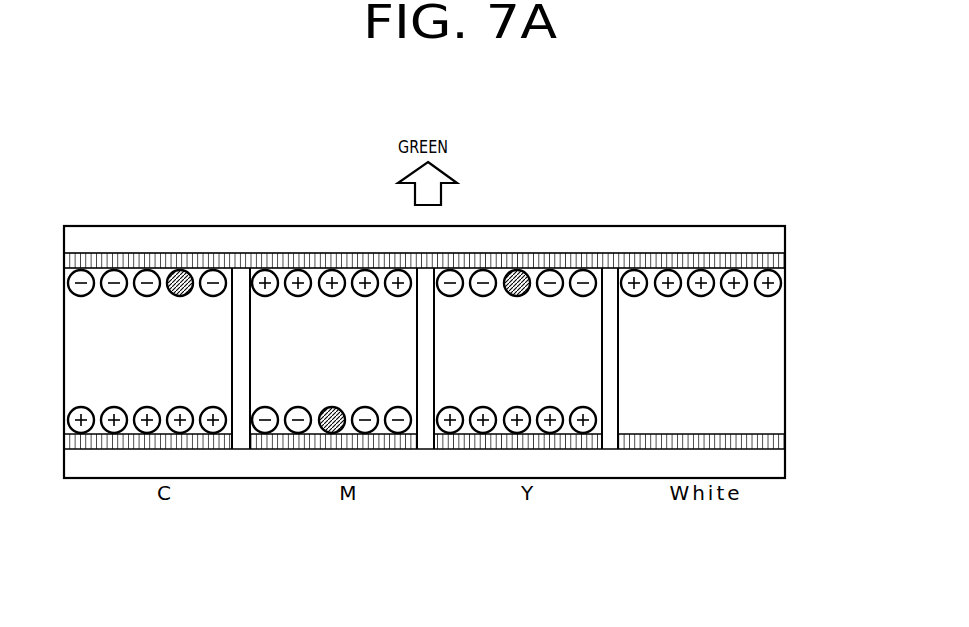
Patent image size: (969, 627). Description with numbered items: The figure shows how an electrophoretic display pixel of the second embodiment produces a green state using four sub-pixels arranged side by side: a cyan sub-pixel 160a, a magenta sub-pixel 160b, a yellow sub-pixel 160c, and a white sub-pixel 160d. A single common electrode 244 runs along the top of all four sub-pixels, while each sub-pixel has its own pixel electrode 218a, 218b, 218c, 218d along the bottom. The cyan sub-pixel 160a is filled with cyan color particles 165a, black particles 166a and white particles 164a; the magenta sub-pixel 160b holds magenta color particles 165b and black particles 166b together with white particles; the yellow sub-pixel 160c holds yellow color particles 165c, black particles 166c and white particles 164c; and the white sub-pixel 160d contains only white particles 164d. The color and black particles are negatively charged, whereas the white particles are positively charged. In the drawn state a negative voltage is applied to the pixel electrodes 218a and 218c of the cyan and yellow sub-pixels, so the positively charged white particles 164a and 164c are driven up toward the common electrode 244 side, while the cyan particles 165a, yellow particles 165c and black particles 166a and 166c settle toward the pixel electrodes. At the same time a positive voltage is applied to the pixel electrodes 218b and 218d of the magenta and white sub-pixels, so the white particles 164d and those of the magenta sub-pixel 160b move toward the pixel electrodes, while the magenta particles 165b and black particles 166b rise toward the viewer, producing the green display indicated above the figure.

The common electrode 244 is at (778, 259).
The cyan pixel cell 160a is at (90, 333).
The magenta pixel cell 160b is at (337, 335).
The yellow pixel cell 160c is at (565, 335).
The white pixel cell 160d is at (710, 335).
The white particles 164a is at (298, 270).
The white particles 164c is at (550, 433).
The white particles 164d is at (665, 271).
The cyan color particles 165a is at (213, 270).
The magenta color particles 165b is at (298, 433).
The yellow color particles 165c is at (452, 270).
The black particles 166a is at (175, 272).
The black particles 166b is at (332, 433).
The black particles 166c is at (518, 271).
The pixel electrode 218a is at (218, 449).
The pixel electrode 218b is at (401, 449).
The pixel electrode 218c is at (583, 449).
The pixel electrode 218d is at (765, 449).